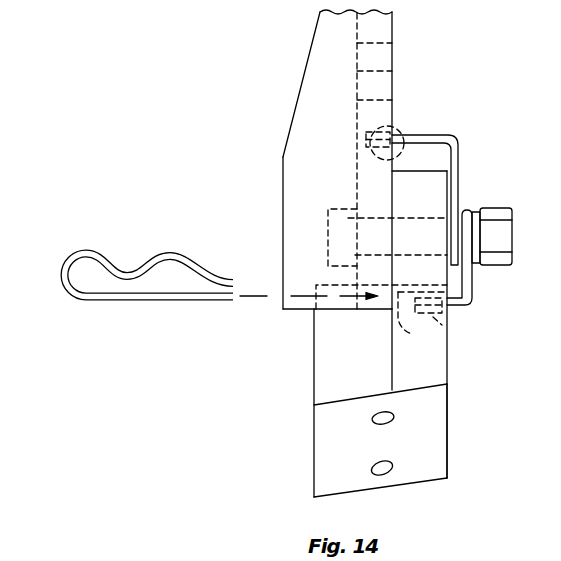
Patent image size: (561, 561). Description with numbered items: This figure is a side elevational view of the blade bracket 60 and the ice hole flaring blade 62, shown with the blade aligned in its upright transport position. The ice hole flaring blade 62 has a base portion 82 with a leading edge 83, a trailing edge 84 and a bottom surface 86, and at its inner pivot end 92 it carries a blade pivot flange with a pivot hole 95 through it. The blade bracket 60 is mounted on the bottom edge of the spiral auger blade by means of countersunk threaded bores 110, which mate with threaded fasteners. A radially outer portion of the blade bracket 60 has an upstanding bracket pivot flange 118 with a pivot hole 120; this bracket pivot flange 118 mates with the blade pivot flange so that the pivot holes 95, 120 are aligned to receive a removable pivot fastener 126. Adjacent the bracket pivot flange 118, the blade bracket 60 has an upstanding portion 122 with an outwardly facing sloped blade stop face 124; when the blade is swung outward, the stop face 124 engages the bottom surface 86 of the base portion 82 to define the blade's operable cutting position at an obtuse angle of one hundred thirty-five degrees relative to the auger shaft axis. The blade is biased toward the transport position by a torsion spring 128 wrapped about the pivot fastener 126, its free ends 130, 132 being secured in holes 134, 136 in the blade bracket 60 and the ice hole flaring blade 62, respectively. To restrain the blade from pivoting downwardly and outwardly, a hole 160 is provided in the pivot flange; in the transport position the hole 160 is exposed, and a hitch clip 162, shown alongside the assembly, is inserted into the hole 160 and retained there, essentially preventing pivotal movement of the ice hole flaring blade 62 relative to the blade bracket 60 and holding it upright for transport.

The blade bracket 60 is at (458, 363).
The ice hole flaring blade 62 is at (276, 197).
The base portion 82 is at (306, 67).
The leading edge 83 is at (314, 28).
The trailing edge 84 is at (393, 29).
The bottom surface 86 is at (333, 124).
The inner pivot end 92 is at (298, 312).
The pivot hole 95 is at (357, 178).
The countersunk threaded bores 110 is at (371, 418).
The bracket pivot flange 118 is at (440, 330).
The pivot hole 120 is at (428, 217).
The upstanding portion 122 is at (323, 390).
The sloped blade stop face 124 is at (368, 347).
The fastener 126 is at (493, 212).
The torsion spring 128 is at (477, 272).
The free end 130 is at (439, 284).
The free end 132 is at (393, 159).
The hole 134 is at (463, 317).
The hole 136 is at (394, 114).
The hole 160 is at (418, 323).
The hitch clip 162 is at (124, 302).